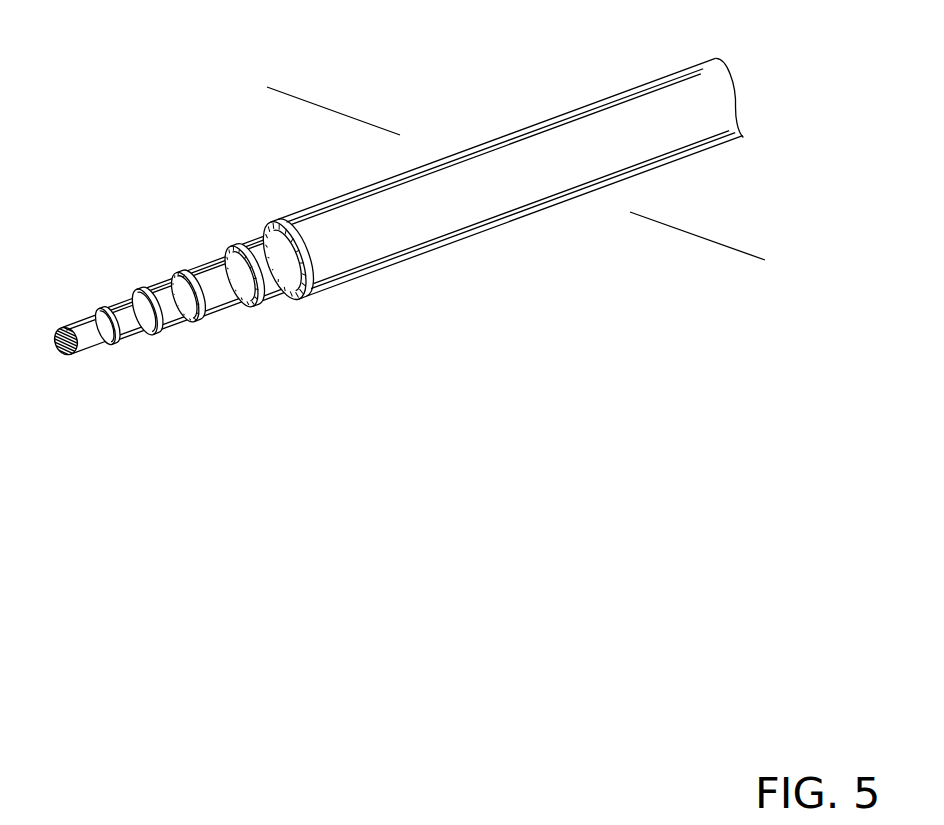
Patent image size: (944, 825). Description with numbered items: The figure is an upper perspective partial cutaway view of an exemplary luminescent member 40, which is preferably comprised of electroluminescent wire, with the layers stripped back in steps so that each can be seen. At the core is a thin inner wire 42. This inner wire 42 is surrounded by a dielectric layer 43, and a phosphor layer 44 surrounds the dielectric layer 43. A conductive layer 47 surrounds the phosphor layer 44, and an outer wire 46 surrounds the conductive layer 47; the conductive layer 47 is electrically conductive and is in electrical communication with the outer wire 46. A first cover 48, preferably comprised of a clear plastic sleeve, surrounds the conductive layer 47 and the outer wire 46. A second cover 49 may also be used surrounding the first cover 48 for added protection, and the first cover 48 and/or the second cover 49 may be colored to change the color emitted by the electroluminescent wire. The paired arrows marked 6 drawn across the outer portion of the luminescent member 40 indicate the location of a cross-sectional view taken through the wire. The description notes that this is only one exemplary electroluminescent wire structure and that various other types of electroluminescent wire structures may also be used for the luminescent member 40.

The luminescent member 40 is at (388, 231).
The inner wire 42 is at (80, 343).
The dielectric layer 43 is at (119, 301).
The phosphor layer 44 is at (178, 313).
The outer wire 46 is at (199, 263).
The conductive layer 47 is at (220, 303).
The first cover 48 is at (272, 293).
The second cover 49 is at (363, 257).
The section line 6- 6 is at (312, 118).